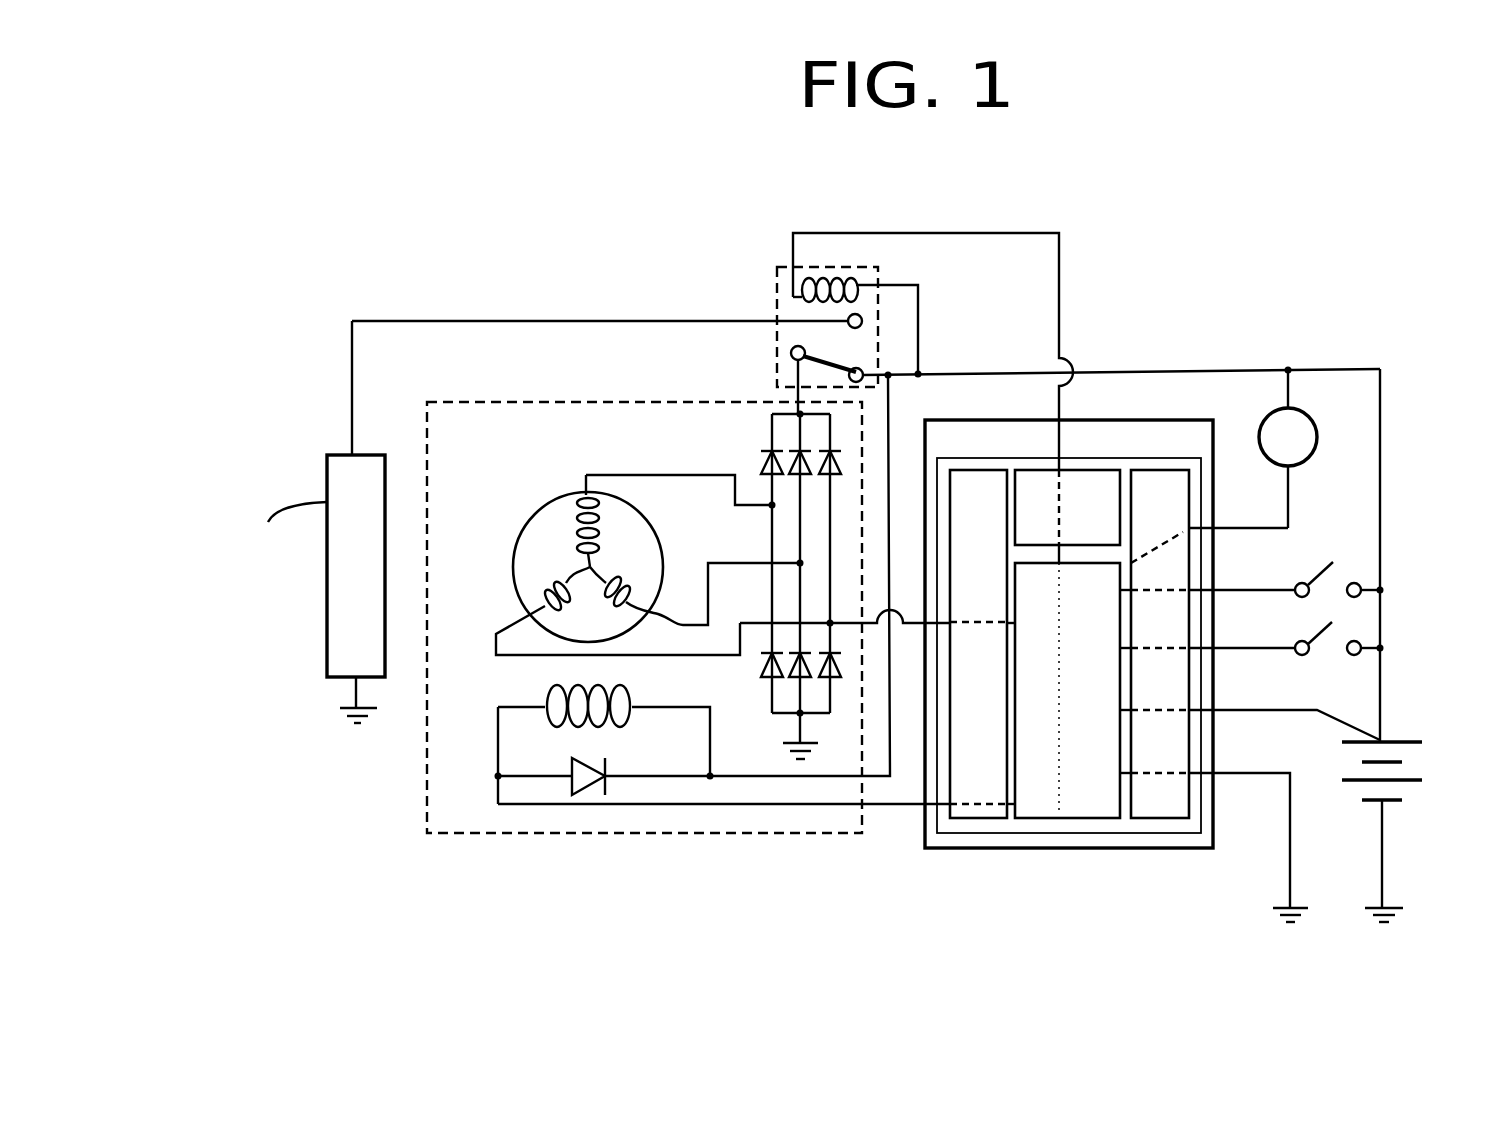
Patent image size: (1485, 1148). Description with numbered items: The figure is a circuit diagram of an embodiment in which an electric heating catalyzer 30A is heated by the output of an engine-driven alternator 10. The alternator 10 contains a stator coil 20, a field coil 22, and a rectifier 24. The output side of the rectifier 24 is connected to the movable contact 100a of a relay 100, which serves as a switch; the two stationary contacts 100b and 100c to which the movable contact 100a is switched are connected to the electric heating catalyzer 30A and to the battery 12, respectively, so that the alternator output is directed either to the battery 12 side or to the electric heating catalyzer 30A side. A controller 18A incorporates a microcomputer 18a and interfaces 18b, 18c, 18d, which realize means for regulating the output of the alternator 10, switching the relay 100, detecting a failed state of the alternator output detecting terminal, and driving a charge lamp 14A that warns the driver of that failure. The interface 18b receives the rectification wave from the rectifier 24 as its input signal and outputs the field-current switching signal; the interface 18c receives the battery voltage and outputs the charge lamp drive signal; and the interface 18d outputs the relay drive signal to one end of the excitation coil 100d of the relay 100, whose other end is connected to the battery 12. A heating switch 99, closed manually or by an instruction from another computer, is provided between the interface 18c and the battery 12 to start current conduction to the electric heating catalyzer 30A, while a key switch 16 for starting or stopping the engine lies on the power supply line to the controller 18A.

The alternator 10 is at (492, 402).
The stator coil 20 is at (540, 505).
The field coil 22 is at (540, 710).
The rectifier 24 is at (753, 463).
The electric heating catalyzer 30A is at (342, 453).
The relay 100 is at (777, 278).
The movable contact 100a is at (791, 353).
The stationary contact 100b is at (862, 320).
The stationary contact 100c is at (865, 380).
The excitation coil 100d is at (845, 270).
The controller 18A is at (1153, 420).
The microcomputer 18a is at (1060, 818).
The interface 18b is at (955, 818).
The interface 18c is at (1160, 818).
The interface 18d is at (1042, 470).
The charge lamp 14A is at (1297, 410).
The key switch 16 is at (1338, 563).
The heating switch 99 is at (1338, 630).
The battery 12 is at (1407, 772).